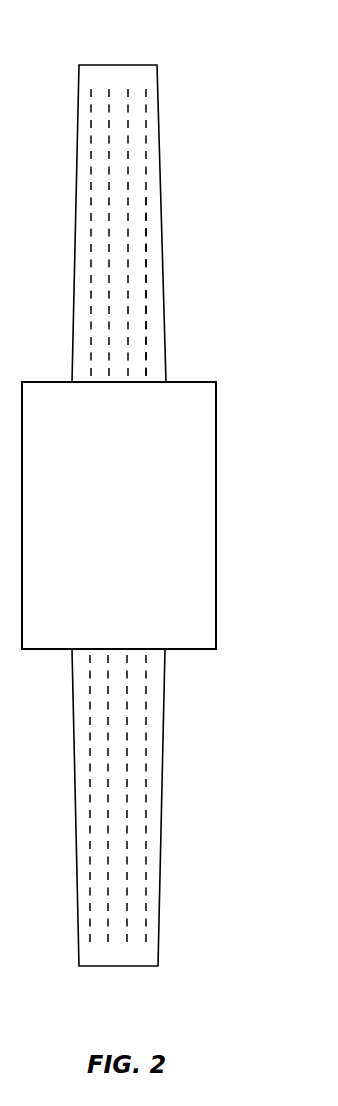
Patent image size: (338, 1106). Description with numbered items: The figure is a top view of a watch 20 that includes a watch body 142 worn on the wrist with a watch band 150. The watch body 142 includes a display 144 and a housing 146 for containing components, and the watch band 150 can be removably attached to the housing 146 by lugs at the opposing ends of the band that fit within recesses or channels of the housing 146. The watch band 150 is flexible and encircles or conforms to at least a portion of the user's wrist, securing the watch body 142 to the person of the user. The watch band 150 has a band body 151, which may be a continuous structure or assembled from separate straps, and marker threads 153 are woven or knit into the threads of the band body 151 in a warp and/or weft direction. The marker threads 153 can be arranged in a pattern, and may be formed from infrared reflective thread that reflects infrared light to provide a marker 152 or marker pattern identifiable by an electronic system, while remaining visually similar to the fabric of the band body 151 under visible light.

The watch 20 is at (168, 499).
The watch body 142 is at (196, 428).
The display 144 is at (196, 515).
The housing 146 is at (200, 627).
The watch band 150 is at (152, 172).
The band body 151 is at (151, 138).
The marker 152 is at (146, 218).
The marker threads 153 is at (146, 108).